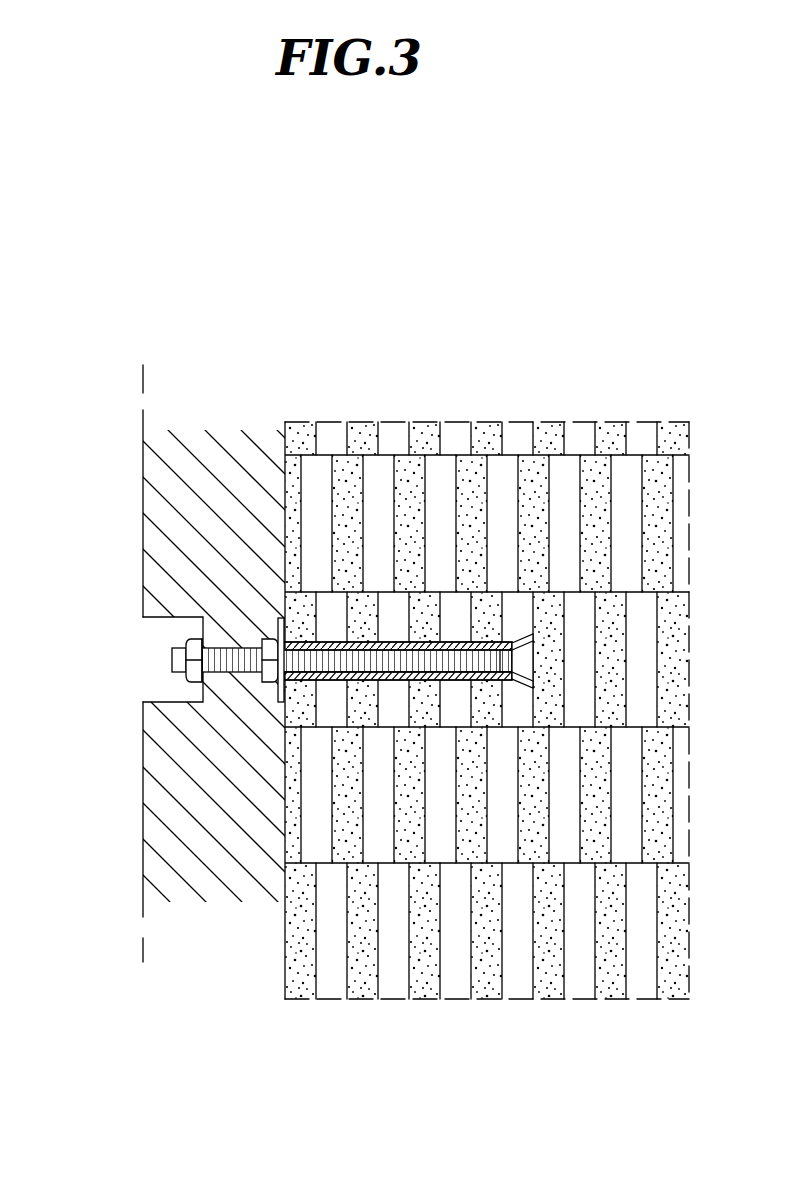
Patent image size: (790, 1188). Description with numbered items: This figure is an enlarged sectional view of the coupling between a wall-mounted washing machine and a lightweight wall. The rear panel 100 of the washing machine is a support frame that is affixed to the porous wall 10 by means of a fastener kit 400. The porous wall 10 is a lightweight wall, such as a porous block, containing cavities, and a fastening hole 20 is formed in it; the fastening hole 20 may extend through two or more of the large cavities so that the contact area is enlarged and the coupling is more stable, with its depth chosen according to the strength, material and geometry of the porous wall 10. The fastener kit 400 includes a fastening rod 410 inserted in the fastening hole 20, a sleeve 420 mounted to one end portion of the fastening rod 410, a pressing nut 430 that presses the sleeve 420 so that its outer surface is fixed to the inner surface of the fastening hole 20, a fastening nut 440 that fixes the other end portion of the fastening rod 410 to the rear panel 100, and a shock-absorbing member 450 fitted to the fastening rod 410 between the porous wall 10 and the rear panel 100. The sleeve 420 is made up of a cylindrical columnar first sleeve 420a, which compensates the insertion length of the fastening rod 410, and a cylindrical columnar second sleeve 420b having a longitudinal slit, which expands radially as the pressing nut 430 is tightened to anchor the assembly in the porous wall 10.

The rear panel 100 is at (173, 792).
The porous wall 10 is at (297, 760).
The fastening hole 20 is at (490, 660).
The fastener kit 400 is at (173, 293).
The fastening rod 410 is at (230, 647).
The sleeve 420 is at (402, 340).
The first sleeve 420a is at (358, 643).
The second sleeve 420b is at (432, 641).
The pressing nut 430 is at (272, 640).
The fastening nut 440 is at (192, 638).
The shock-absorbing member 450 is at (281, 622).